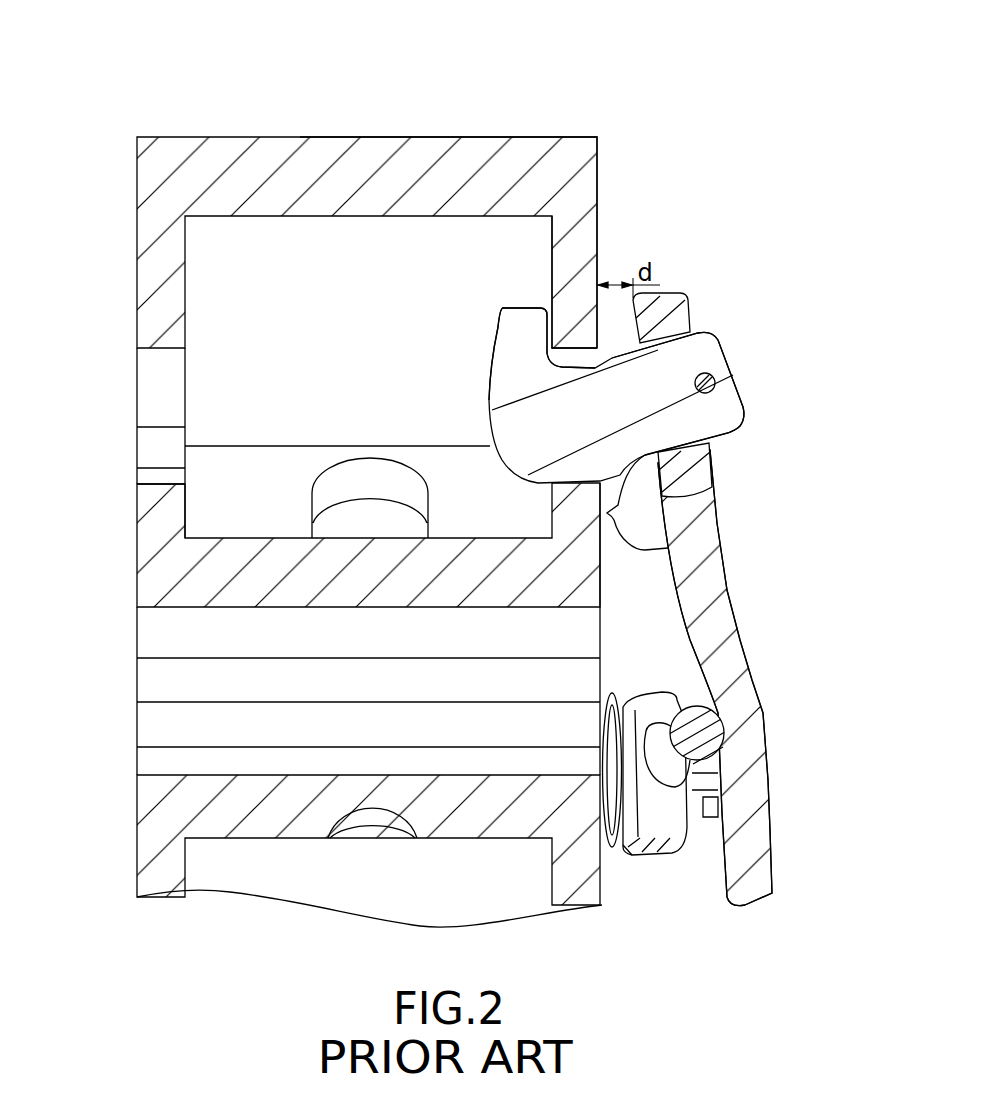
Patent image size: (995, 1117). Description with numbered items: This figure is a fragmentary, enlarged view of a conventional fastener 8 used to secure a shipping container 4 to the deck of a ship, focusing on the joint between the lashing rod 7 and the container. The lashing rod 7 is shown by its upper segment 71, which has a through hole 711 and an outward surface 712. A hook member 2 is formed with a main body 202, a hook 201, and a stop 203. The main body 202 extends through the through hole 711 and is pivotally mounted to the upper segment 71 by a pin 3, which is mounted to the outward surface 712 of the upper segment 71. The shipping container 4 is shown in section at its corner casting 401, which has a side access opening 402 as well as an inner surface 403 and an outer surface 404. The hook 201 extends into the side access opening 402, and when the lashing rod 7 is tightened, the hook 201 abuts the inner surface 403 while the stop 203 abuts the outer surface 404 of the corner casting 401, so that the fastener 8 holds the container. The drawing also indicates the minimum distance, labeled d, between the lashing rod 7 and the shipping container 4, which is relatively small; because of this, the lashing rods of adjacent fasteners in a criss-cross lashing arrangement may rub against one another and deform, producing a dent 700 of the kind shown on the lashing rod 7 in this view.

The shipping container 4 is at (32, 137).
The corner casting 401 is at (538, 135).
The side access opening 402 is at (586, 318).
The inner surface 403 is at (550, 268).
The outer surface 404 is at (602, 558).
The hook member 2 is at (635, 301).
The hook 201 is at (527, 330).
The main body 202 is at (697, 350).
The stop 203 is at (668, 547).
The pin 3 is at (713, 375).
The lashing rod 7 is at (736, 703).
The upper segment 71 is at (723, 622).
The dent 700 is at (720, 715).
The fastener 8 is at (756, 586).
The through hole 711 is at (688, 448).
The outward surface 712 is at (685, 310).